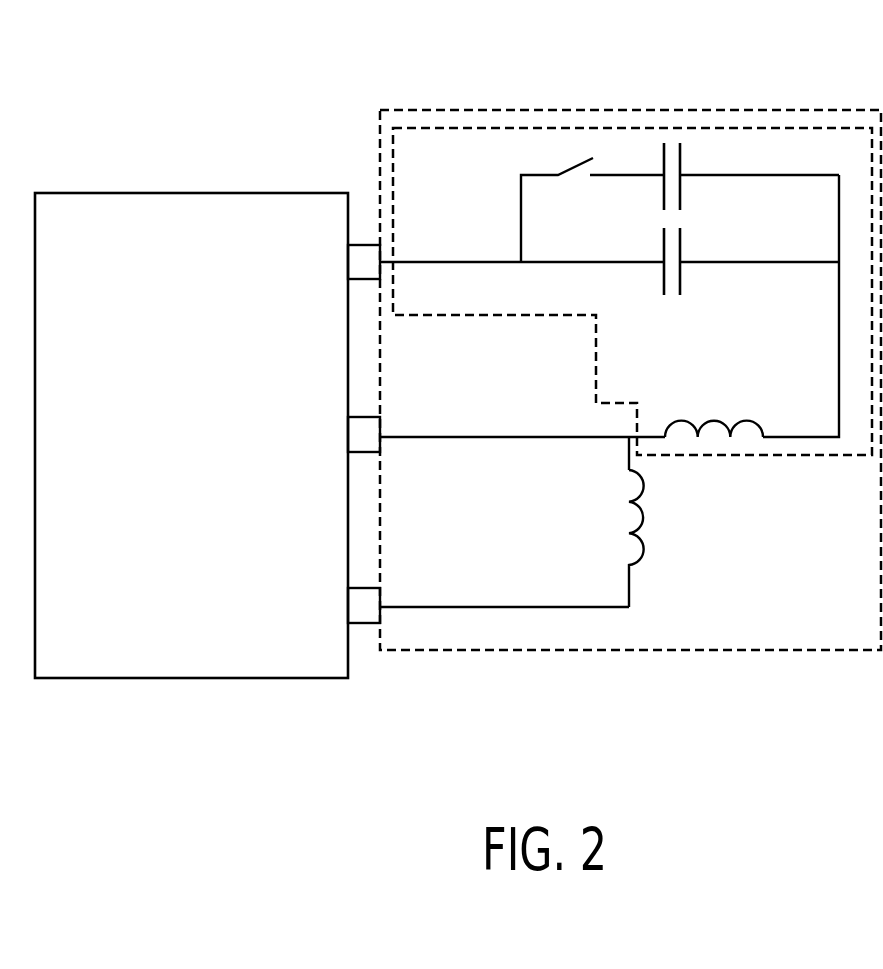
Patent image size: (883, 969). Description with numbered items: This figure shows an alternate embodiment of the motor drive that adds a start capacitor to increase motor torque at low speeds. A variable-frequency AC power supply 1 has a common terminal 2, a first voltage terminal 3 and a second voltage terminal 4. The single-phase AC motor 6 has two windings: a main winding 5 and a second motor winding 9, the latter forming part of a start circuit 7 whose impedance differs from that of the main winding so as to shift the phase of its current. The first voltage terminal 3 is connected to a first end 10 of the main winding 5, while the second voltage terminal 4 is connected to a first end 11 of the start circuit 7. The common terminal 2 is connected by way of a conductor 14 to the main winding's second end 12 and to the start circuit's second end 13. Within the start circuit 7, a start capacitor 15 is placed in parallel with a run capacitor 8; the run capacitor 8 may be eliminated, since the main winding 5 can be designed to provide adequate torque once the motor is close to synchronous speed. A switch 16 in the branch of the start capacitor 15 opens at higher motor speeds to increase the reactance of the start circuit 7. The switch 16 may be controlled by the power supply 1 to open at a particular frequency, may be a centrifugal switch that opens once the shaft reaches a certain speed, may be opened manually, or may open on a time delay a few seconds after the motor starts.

The variable-frequency AC power supply 1 is at (204, 498).
The common terminal 2 is at (364, 434).
The first voltage terminal 3 is at (364, 605).
The second voltage terminal 4 is at (364, 262).
The main winding 5 is at (632, 588).
The single-phase AC motor 6 is at (695, 651).
The start circuit 7 is at (683, 128).
The run capacitor 8 is at (660, 270).
The second motor winding 9 is at (745, 418).
The first end of the main winding 10 is at (397, 607).
The first end of the start circuit 11 is at (407, 262).
The second end of the main winding 12 is at (628, 452).
The second end of the start circuit 13 is at (647, 438).
The conductor 14 is at (472, 437).
The start capacitor 15 is at (682, 187).
The switch 16 is at (592, 210).